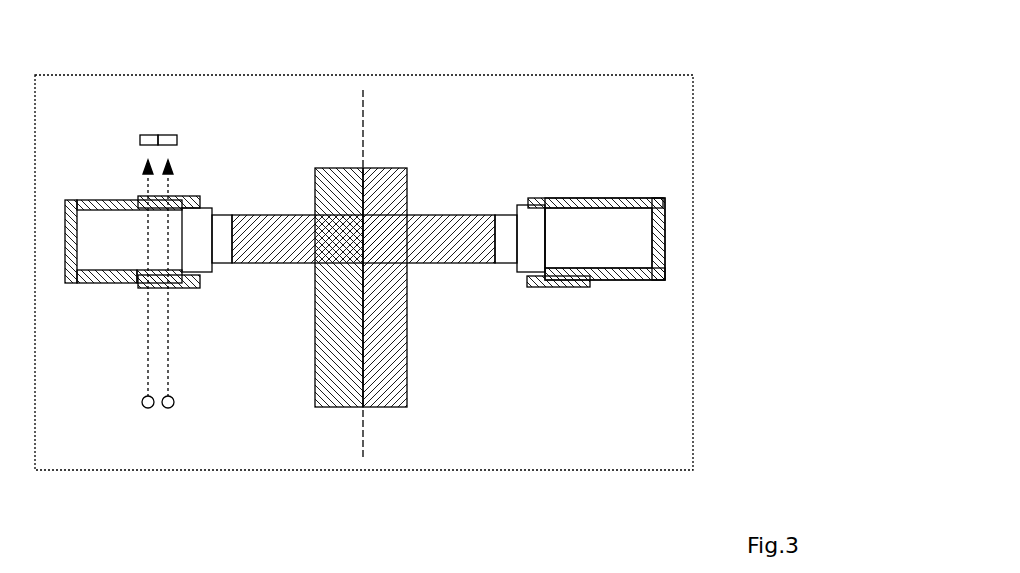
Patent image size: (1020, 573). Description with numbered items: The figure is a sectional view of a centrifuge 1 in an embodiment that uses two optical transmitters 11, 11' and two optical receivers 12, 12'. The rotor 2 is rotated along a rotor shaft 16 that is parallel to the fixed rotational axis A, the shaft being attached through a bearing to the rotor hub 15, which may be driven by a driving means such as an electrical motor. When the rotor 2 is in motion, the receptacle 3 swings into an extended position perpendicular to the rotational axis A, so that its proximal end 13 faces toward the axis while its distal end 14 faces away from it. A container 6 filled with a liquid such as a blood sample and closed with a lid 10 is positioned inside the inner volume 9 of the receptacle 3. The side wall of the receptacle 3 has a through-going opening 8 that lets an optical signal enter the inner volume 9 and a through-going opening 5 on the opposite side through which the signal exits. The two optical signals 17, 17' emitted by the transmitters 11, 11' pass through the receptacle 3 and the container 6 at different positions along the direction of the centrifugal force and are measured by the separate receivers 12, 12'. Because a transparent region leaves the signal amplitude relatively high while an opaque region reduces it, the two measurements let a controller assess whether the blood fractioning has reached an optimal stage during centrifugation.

The centrifuge 1 is at (641, 65).
The rotor 2 is at (443, 214).
The receptacle 3 is at (638, 281).
The through-going opening 5 is at (182, 193).
The container 6 is at (148, 284).
The through-going opening 8 is at (200, 289).
The inner volume 9 is at (523, 273).
The lid 10 is at (212, 218).
The optical transmitter 11 is at (212, 420).
The optical transmitter 11' is at (113, 416).
The optical receiver 12 is at (194, 114).
The optical receiver 12' is at (129, 114).
The proximal end 13 is at (203, 282).
The distal end 14 is at (65, 277).
The rotor hub 15 is at (410, 360).
The rotor shaft 16 is at (365, 410).
The optical signal 17 is at (201, 287).
The optical signal 17' is at (120, 278).
The rotational axis A is at (366, 120).